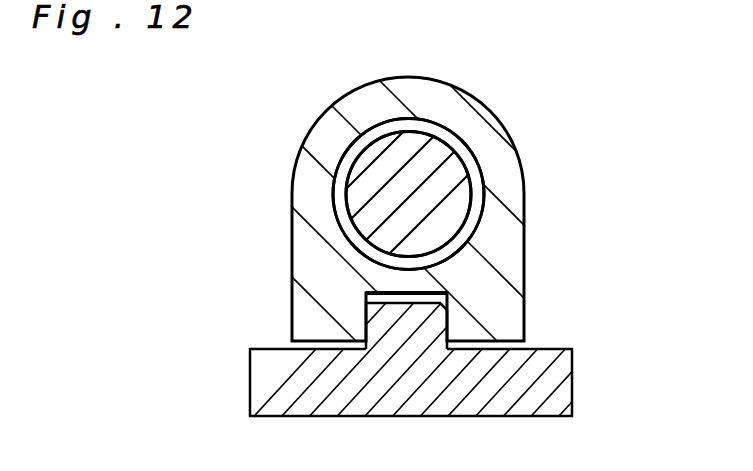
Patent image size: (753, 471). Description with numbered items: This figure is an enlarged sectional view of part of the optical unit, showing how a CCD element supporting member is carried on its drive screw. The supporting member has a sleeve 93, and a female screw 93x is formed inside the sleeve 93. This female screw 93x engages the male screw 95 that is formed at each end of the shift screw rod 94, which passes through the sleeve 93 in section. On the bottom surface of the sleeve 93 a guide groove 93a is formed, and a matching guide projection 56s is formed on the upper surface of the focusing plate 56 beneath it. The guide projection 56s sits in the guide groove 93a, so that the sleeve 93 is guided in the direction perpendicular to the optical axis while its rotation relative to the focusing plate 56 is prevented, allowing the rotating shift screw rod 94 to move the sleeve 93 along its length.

The sleeve 93 is at (293, 237).
The female screw 93x is at (349, 168).
The guide groove 93a is at (395, 297).
The shift screw rod 94 is at (453, 165).
The male screw 95 is at (481, 185).
The focusing plate 56 is at (546, 349).
The guide projection 56s is at (432, 310).